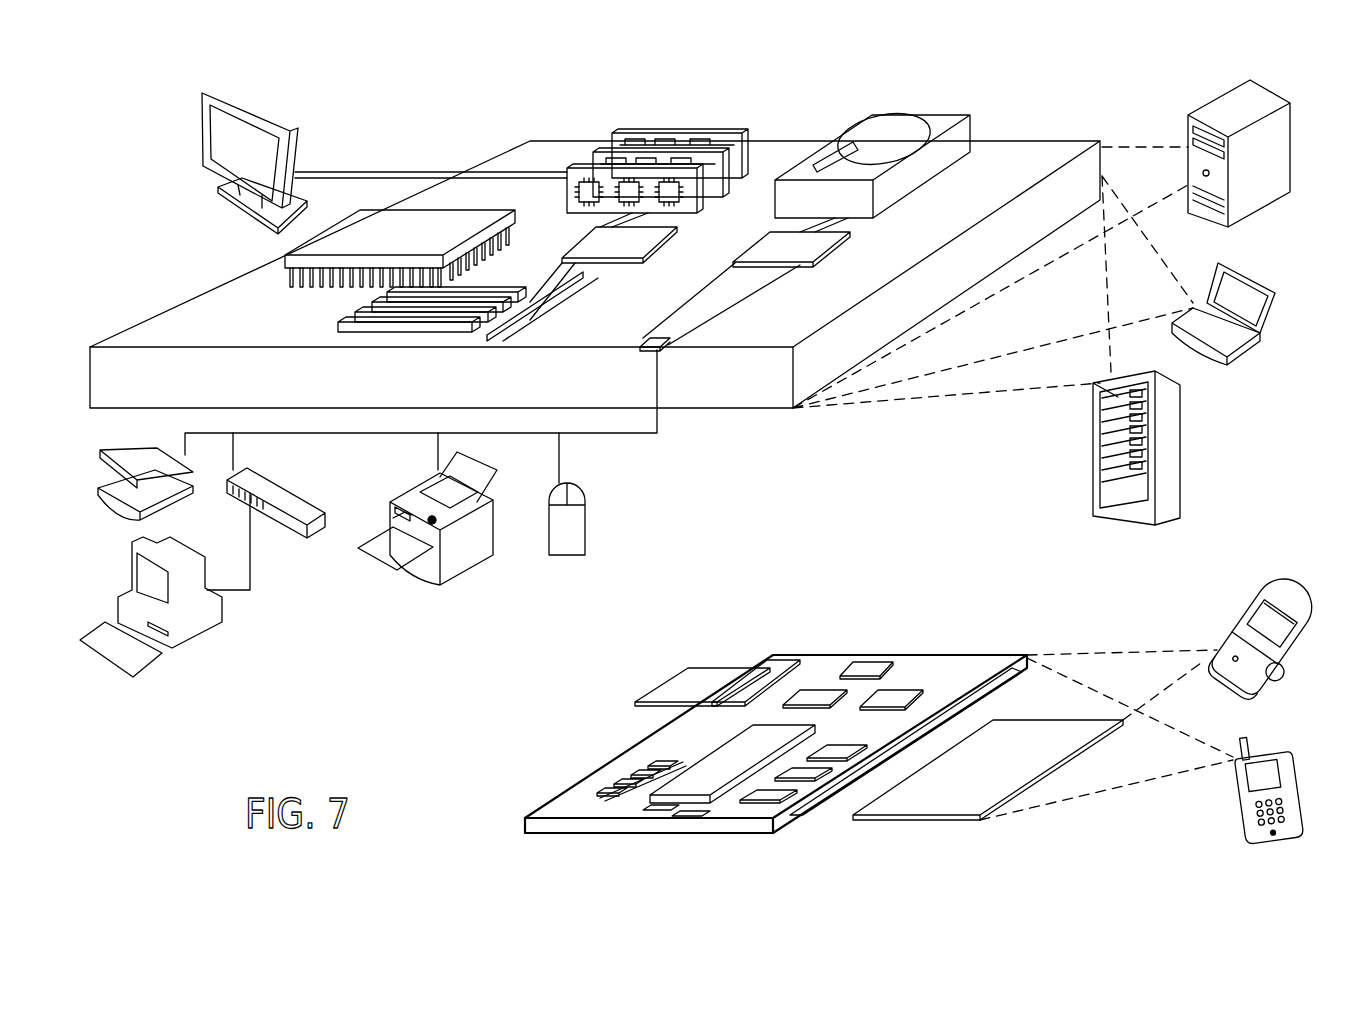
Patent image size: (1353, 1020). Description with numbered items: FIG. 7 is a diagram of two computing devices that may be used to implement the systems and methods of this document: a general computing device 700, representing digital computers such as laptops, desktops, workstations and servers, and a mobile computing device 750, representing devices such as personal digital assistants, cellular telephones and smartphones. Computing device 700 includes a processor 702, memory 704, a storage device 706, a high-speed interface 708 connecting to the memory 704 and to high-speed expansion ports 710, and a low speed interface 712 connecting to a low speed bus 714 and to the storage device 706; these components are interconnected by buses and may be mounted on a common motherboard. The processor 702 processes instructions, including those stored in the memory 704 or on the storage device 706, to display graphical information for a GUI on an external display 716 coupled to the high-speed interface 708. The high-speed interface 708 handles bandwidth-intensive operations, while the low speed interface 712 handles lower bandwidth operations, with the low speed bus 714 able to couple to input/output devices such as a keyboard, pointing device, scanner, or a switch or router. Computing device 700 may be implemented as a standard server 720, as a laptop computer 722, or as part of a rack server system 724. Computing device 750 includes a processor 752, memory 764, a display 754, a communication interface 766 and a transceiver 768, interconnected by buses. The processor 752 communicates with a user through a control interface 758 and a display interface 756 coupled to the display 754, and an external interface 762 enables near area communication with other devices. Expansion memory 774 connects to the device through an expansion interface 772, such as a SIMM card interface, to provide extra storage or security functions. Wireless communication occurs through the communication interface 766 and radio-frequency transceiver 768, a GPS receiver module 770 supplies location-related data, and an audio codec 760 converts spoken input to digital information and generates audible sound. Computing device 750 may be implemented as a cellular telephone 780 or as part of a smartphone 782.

The computing device 700 is at (407, 94).
The processor 702 is at (250, 265).
The memory 704 is at (625, 140).
The storage device 706 is at (859, 129).
The high-speed interface 708 is at (591, 241).
The high-speed expansion ports 710 is at (363, 310).
The low speed interface 712 is at (783, 238).
The low speed bus 714 is at (660, 348).
The display 716 is at (203, 96).
The standard server 720 is at (1188, 127).
The laptop computer 722 is at (1220, 266).
The rack server system 724 is at (1093, 479).
The computing device 750 is at (757, 634).
The processor 752 is at (700, 806).
The display 754 is at (988, 822).
The display interface 756 is at (782, 806).
The control interface 758 is at (820, 782).
The audio codec 760 is at (887, 780).
The external interface 762 is at (670, 822).
The memory 764 is at (609, 778).
The communication interface 766 is at (827, 693).
The transceiver 768 is at (902, 692).
The GPS receiver module 770 is at (877, 660).
The expansion interface 772 is at (756, 669).
The expansion memory 774 is at (673, 667).
The cellular telephone 780 is at (1260, 593).
The smartphone 782 is at (1250, 737).